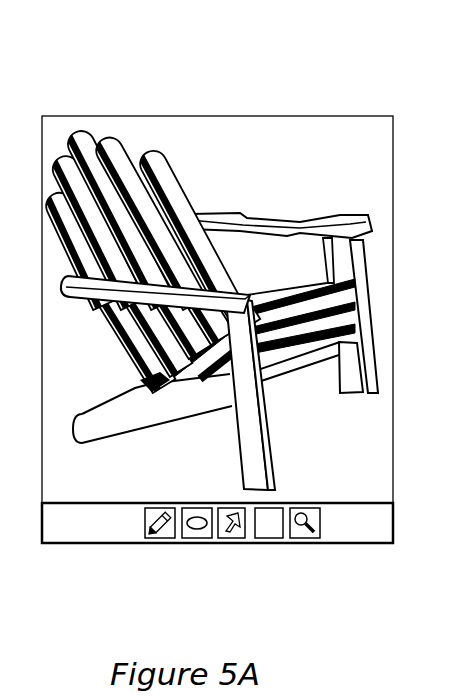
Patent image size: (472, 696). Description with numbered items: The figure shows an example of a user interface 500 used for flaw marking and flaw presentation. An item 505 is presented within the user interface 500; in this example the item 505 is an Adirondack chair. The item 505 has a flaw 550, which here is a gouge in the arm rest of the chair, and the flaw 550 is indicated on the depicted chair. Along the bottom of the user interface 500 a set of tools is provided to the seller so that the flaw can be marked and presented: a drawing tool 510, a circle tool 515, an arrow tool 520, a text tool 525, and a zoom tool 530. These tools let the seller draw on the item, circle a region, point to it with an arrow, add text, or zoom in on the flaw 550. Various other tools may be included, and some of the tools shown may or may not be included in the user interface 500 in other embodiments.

The user interface 500 is at (265, 61).
The item 505 is at (115, 150).
The flaw 550 is at (279, 208).
The drawing tool 510 is at (165, 538).
The circle tool 515 is at (202, 538).
The arrow tool 520 is at (235, 538).
The text tool 525 is at (272, 538).
The zoom tool 530 is at (307, 538).